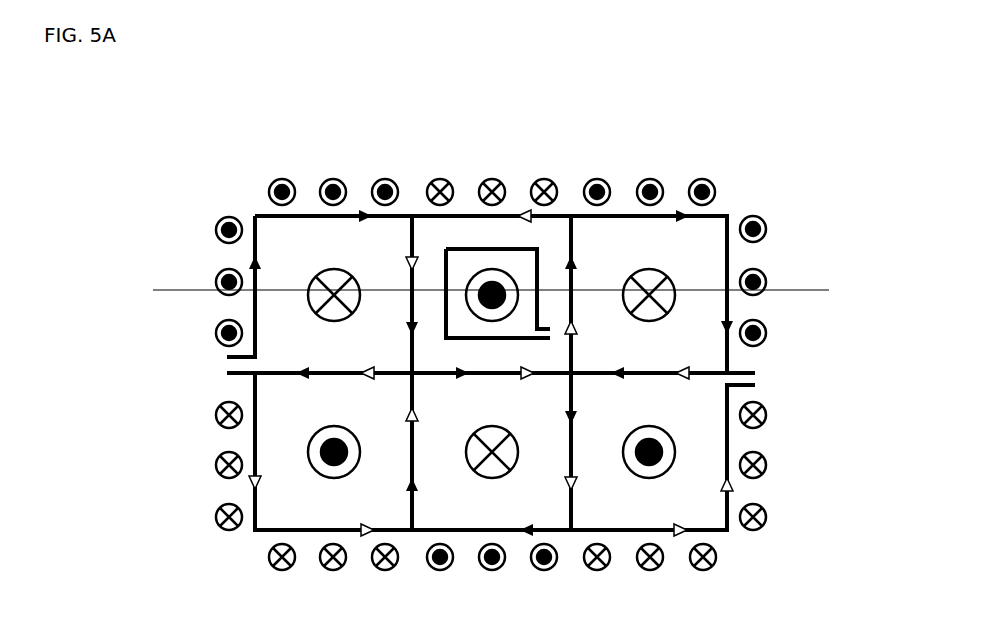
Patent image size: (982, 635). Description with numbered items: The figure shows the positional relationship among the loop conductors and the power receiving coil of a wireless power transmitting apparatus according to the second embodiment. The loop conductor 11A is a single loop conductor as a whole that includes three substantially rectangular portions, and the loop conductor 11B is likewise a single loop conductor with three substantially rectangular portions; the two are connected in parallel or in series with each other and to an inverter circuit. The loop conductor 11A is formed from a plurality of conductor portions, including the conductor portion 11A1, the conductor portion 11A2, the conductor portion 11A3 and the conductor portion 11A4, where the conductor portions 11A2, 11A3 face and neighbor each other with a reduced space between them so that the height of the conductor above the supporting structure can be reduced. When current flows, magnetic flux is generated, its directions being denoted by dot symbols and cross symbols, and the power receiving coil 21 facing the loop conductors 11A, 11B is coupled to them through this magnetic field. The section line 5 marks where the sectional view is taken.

The section line 5- 5 is at (162, 295).
The loop conductor 11A is at (728, 216).
The conductor portion 11A1 is at (255, 278).
The conductor portion 11A2 is at (412, 277).
The conductor portion 11A3 is at (571, 277).
The conductor portion 11A4 is at (730, 263).
The loop conductor 11B is at (727, 530).
The power receiving coil 21 is at (537, 249).